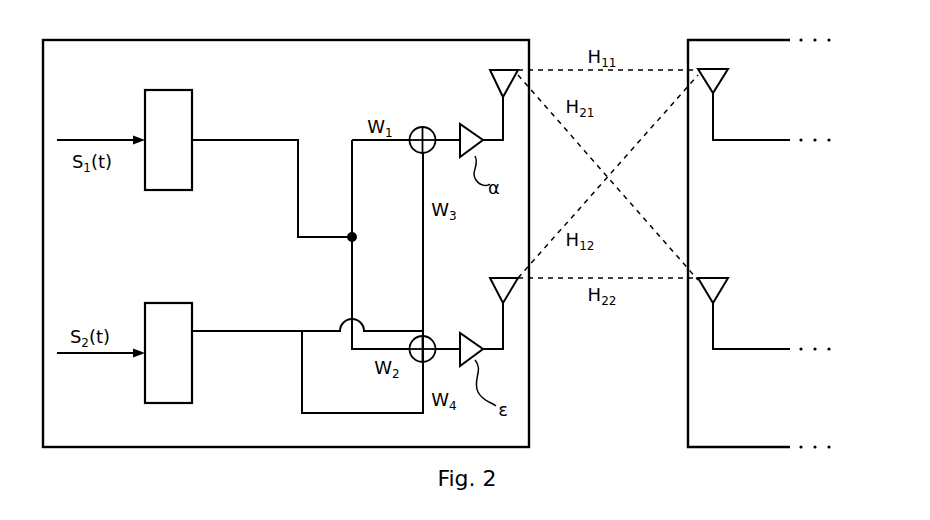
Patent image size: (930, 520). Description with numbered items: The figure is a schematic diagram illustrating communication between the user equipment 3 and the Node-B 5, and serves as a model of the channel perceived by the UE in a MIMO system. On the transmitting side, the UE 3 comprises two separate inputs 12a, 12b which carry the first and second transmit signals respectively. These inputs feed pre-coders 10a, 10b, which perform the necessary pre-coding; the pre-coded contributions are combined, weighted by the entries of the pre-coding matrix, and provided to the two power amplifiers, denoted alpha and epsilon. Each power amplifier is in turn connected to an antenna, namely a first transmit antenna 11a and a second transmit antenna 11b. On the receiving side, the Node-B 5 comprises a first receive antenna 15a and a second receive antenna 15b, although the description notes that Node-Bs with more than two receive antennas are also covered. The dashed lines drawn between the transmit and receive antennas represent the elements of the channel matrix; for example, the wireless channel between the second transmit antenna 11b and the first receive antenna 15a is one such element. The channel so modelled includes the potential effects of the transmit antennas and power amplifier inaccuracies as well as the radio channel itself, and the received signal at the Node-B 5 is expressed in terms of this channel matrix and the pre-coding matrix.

The user equipment 3 is at (280, 67).
The Node-B 5 is at (766, 67).
The first pre-coder 10a is at (186, 125).
The second pre-coder 10b is at (186, 338).
The first transmit antenna 11a is at (490, 74).
The second transmit antenna 11b is at (490, 284).
The first input 12a is at (83, 140).
The second input 12b is at (97, 356).
The first receive antenna 15a is at (728, 78).
The second receive antenna 15b is at (728, 288).